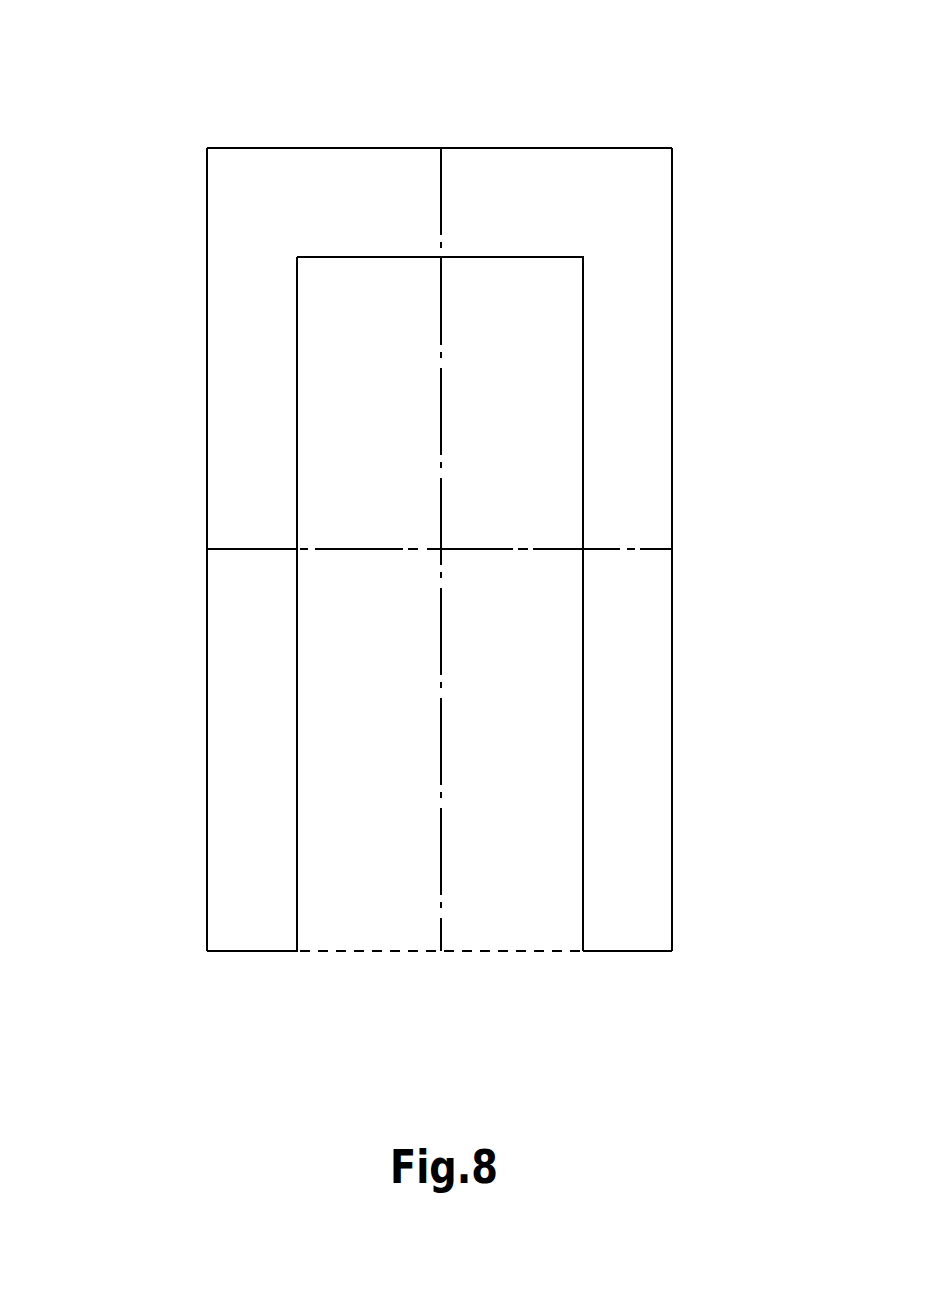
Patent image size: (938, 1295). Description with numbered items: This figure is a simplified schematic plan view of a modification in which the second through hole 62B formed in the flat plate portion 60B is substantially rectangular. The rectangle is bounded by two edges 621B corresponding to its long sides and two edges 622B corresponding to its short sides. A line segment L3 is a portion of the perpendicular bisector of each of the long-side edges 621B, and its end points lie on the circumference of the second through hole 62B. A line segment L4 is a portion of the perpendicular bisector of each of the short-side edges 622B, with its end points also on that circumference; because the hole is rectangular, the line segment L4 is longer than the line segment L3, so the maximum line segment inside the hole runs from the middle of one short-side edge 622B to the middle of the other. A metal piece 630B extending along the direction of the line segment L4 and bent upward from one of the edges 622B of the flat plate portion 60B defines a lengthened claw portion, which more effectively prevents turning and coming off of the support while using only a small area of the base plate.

The flat plate portion 60B is at (718, 230).
The second through hole 62B is at (252, 369).
The edges corresponding to long sides of the rectangle 621B is at (207, 623).
The edges corresponding to short sides of the rectangle 622B is at (380, 148).
The metal piece 630B is at (510, 460).
The line segment L3 is at (252, 548).
The line segment L4 is at (441, 890).